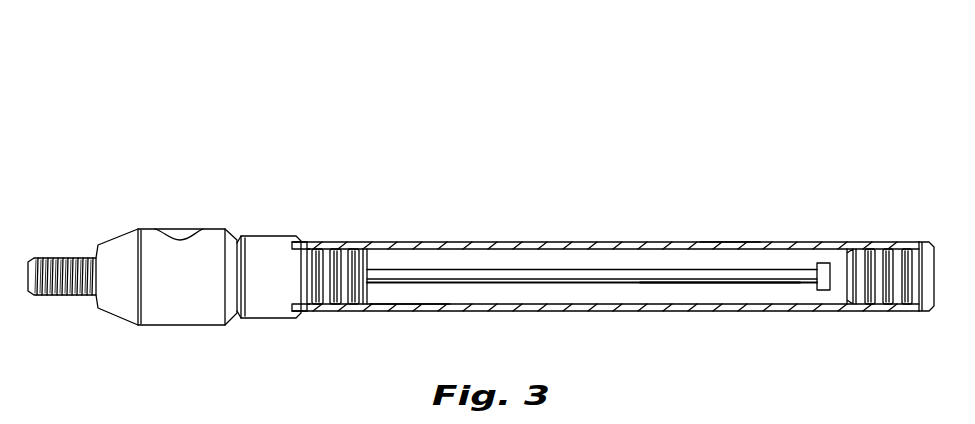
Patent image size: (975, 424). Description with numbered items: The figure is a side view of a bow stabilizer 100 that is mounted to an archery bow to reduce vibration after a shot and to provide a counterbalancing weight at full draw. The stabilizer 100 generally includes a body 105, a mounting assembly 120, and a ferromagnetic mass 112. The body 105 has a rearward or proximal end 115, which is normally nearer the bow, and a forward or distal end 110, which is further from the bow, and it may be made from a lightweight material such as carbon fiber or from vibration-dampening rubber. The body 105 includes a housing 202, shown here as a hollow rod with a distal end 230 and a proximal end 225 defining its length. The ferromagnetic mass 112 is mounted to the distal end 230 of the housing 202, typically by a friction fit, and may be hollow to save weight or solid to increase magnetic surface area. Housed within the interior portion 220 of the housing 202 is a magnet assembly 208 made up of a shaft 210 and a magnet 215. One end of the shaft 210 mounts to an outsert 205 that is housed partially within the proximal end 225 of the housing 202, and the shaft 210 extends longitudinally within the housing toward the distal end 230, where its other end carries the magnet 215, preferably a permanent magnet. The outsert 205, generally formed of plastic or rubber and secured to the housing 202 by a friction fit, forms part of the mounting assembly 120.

The stabilizer 100 is at (672, 110).
The body 105 is at (552, 212).
The distal end 110 is at (932, 209).
The ferromagnetic mass 112 is at (934, 288).
The proximal end 115 is at (323, 216).
The mounting assembly 120 is at (164, 197).
The housing 202 is at (722, 242).
The outsert 205 is at (275, 321).
The magnet assembly 208 is at (719, 300).
The shaft 210 is at (605, 285).
The magnet 215 is at (822, 292).
The interior portion 220 is at (402, 306).
The proximal end 225 is at (327, 243).
The distal end 230 is at (873, 242).